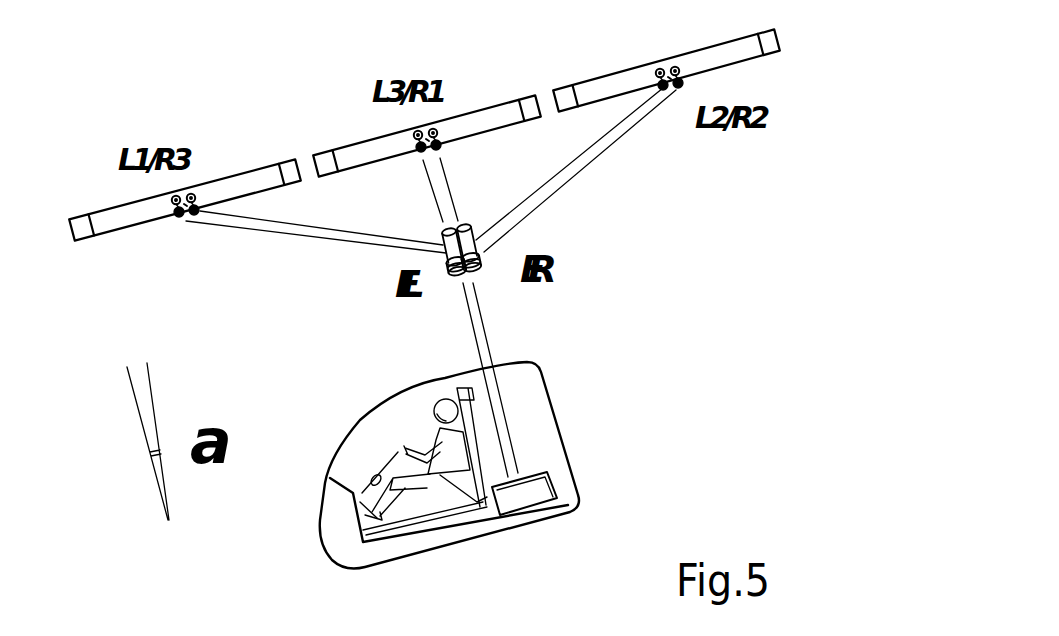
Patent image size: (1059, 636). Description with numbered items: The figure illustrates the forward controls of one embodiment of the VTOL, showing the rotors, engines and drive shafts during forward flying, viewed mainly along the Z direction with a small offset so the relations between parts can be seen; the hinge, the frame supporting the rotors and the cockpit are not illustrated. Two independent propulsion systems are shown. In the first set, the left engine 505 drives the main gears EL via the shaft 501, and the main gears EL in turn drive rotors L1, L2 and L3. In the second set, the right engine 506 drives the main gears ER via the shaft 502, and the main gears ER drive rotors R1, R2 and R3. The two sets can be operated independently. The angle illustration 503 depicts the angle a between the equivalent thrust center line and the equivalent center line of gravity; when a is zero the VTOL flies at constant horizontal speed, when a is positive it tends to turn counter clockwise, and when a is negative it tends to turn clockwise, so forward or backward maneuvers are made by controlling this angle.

The shaft 501 is at (468, 321).
The shaft 502 is at (484, 316).
The angle illustration 503 is at (140, 373).
The left engine 505 is at (493, 490).
The right engine 506 is at (548, 475).